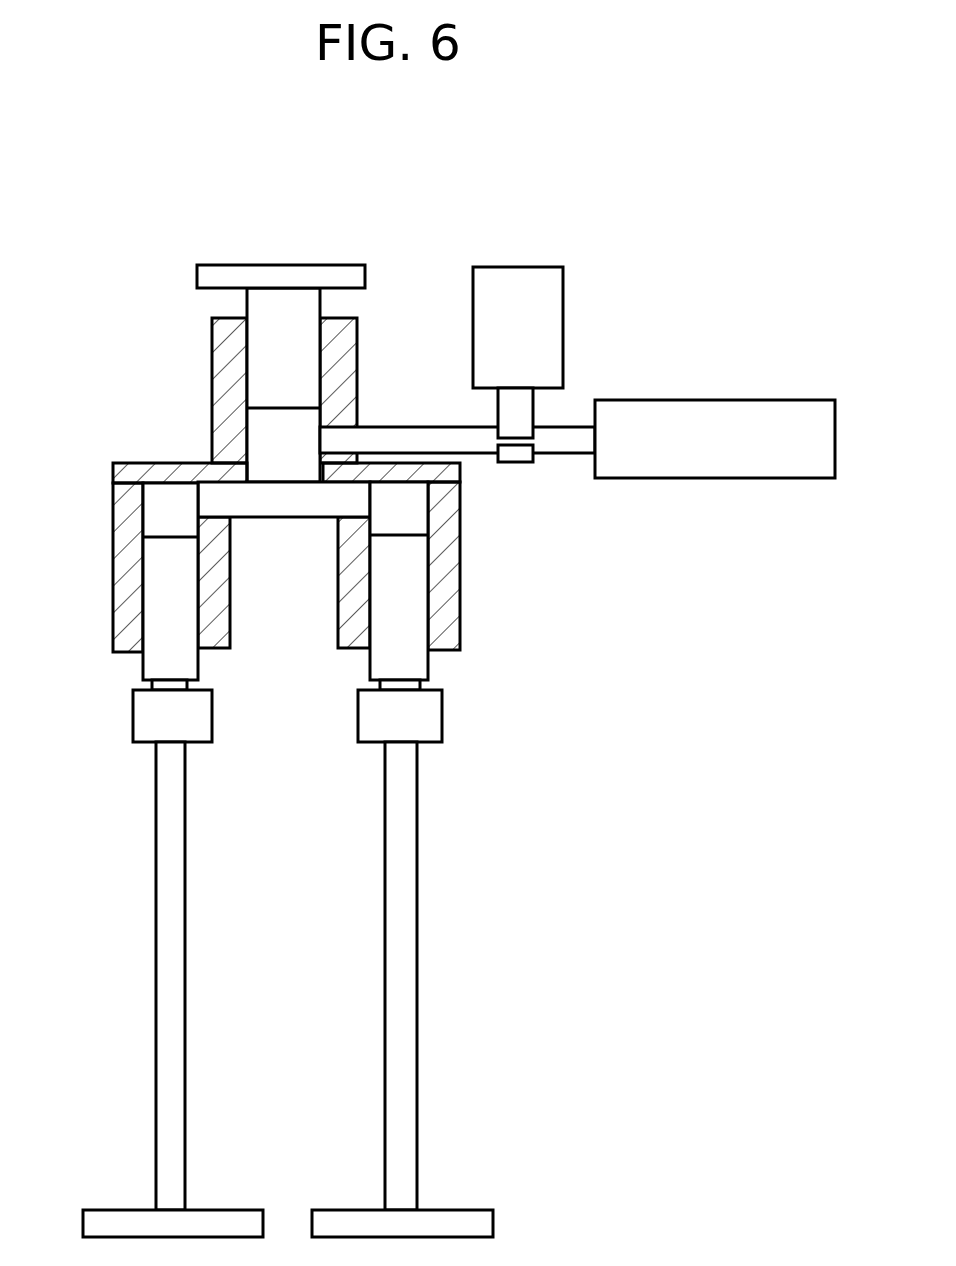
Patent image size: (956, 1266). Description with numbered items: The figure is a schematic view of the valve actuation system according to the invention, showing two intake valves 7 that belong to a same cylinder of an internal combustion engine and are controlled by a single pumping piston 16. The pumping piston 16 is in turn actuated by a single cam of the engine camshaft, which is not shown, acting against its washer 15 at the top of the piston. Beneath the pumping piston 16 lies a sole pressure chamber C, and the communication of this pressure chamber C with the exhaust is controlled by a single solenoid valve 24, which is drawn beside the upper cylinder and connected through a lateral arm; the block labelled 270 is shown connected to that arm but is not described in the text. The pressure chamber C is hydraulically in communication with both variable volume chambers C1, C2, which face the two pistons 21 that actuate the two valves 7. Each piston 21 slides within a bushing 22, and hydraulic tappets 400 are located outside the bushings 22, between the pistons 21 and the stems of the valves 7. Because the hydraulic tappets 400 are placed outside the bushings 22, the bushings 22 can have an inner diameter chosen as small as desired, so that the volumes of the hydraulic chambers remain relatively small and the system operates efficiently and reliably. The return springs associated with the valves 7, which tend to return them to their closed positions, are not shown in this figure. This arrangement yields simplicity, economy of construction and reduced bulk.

The washer 15 is at (302, 272).
The pumping piston 16 is at (272, 322).
The pressure chamber C is at (285, 443).
The variable volume chamber C1 is at (153, 512).
The variable volume chamber C2 is at (408, 510).
The bushing 22 is at (113, 613).
The piston 21 is at (167, 645).
The hydraulic tappet 400 is at (150, 727).
The intake valve 7 is at (156, 961).
The solenoid valve 24 is at (515, 290).
The control unit 270 is at (762, 412).